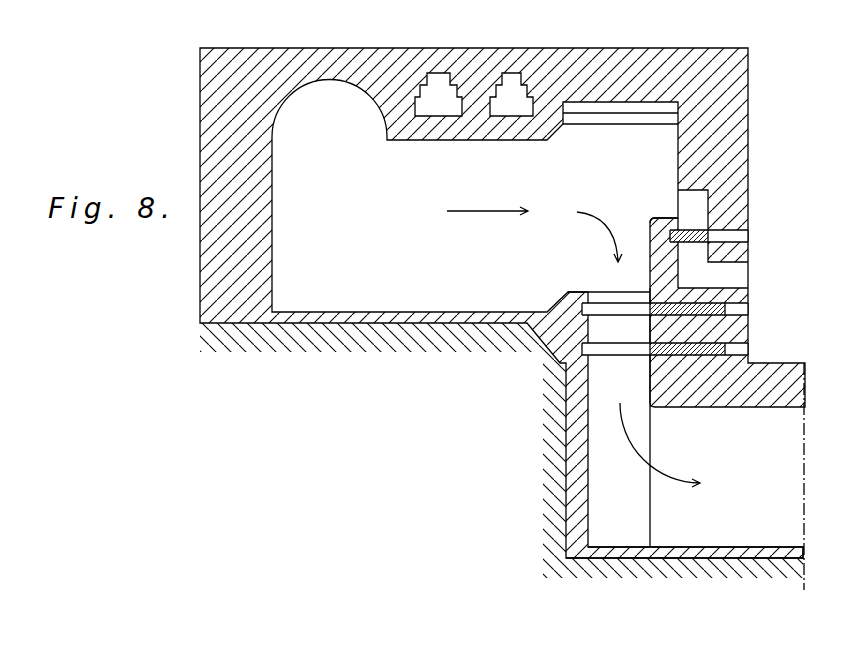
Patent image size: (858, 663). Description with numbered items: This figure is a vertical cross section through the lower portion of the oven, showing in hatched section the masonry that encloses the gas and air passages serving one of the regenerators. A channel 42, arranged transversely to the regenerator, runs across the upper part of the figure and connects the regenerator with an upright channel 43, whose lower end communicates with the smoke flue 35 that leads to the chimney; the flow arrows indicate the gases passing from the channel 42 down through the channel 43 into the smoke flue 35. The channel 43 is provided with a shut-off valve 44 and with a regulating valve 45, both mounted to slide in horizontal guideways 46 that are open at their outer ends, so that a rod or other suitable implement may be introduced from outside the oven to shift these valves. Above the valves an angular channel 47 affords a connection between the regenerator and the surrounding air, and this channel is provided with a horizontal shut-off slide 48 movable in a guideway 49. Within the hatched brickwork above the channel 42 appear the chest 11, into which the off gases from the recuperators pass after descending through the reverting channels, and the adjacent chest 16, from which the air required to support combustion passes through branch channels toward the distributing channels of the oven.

The chest 11 is at (511, 94).
The chest 16 is at (438, 94).
The smoke flue 35 is at (685, 476).
The channel 42 is at (502, 303).
The upright channel 43 is at (598, 297).
The shut-off valve 44 is at (650, 323).
The regulating valve 45 is at (648, 354).
The horizontal guideways 46 is at (740, 313).
The angular channel 47 is at (737, 277).
The horizontal shut-off slide 48 is at (668, 235).
The guideway 49 is at (748, 237).